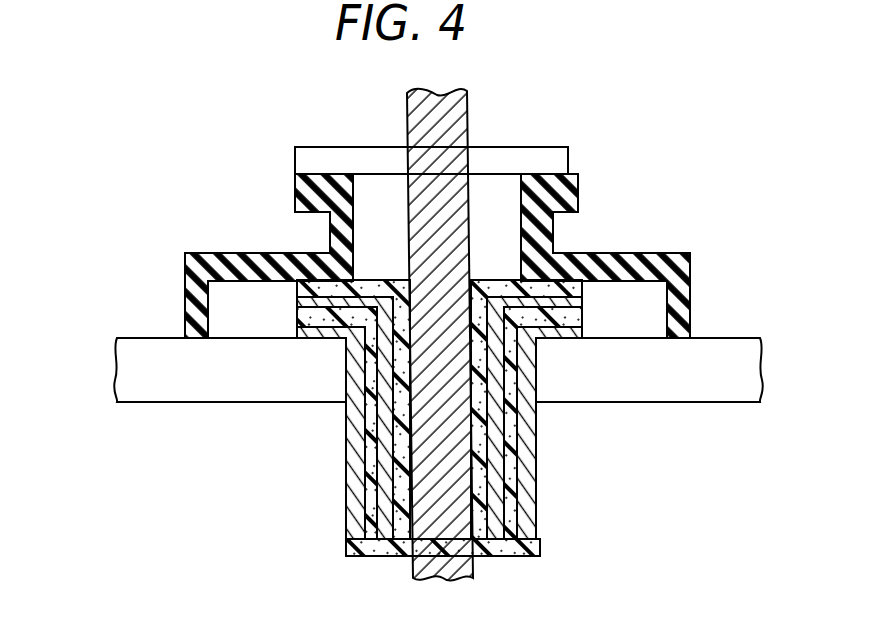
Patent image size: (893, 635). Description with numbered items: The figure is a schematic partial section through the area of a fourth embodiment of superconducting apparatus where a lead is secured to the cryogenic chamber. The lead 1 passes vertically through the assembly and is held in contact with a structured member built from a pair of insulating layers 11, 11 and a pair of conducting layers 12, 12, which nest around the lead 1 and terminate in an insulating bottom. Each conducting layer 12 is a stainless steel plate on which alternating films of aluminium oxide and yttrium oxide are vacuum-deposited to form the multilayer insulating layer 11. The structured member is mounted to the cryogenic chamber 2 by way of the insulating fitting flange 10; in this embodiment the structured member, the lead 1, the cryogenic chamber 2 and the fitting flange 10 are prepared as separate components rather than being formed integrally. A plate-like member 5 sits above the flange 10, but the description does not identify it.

The lead 1 is at (463, 115).
The cryogenic chamber 2 is at (743, 347).
The head plate 5 is at (568, 160).
The fitting flange 10 is at (677, 263).
The insulating layer 11 is at (542, 548).
The conducting layer 12 is at (527, 502).